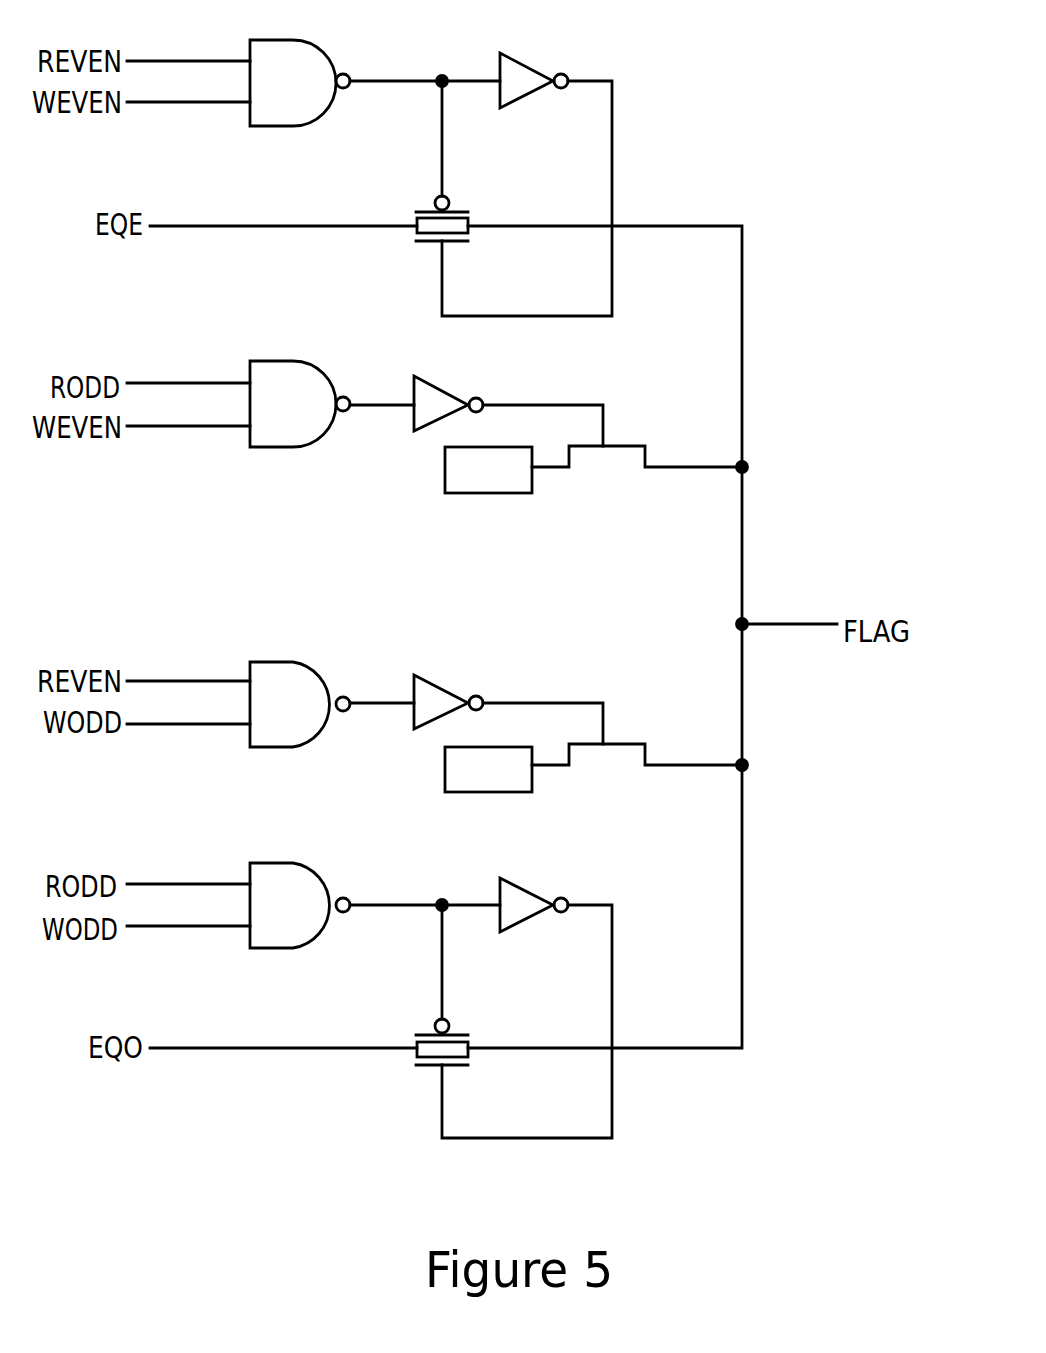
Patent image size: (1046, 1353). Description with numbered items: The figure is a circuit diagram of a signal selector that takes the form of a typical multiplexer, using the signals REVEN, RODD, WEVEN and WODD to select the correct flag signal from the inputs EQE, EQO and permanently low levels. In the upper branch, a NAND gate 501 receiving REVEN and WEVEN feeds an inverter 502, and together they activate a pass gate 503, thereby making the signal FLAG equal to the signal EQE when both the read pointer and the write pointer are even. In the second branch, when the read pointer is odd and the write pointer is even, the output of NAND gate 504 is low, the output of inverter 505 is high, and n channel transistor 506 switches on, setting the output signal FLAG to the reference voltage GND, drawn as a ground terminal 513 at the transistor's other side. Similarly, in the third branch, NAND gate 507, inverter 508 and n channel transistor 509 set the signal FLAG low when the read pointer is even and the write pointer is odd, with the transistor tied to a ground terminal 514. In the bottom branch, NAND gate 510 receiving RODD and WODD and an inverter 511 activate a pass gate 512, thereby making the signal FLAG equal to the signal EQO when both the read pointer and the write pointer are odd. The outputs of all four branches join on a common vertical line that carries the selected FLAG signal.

The NAND gate 501 is at (276, 40).
The inverter 502 is at (522, 63).
The pass gate 503 is at (458, 212).
The NAND gate 504 is at (273, 361).
The inverter 505 is at (437, 385).
The n channel transistor 506 is at (627, 442).
The NAND gate 507 is at (272, 662).
The inverter 508 is at (428, 673).
The n channel transistor 509 is at (627, 740).
The NAND gate 510 is at (272, 863).
The inverter 511 is at (523, 887).
The pass gate 512 is at (457, 1035).
The ground terminal 513 is at (487, 493).
The ground terminal 514 is at (500, 792).